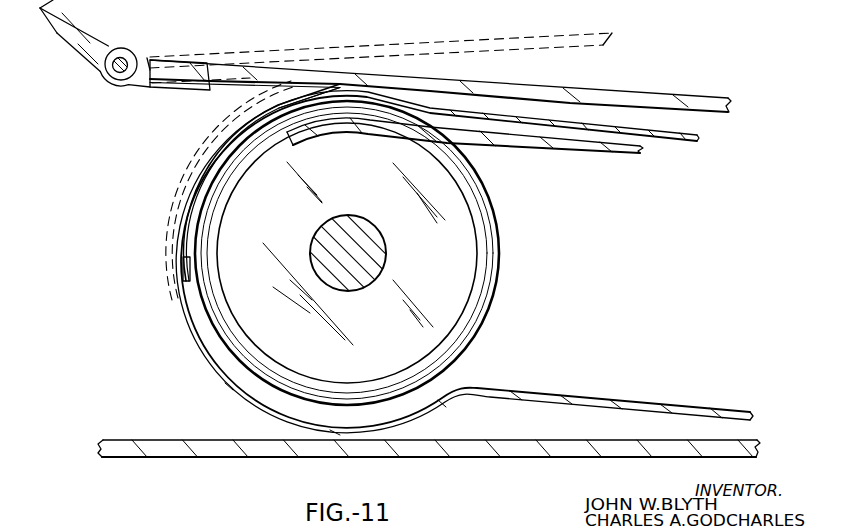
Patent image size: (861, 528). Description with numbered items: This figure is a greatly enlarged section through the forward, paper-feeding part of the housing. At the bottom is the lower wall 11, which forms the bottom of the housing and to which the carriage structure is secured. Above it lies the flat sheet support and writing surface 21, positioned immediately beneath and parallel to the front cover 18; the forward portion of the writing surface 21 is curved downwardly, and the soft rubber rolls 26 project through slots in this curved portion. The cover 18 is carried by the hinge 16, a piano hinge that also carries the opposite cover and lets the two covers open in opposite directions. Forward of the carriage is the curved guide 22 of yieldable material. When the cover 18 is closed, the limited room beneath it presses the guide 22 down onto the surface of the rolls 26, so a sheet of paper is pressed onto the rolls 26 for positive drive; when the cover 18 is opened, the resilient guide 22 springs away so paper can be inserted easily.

The lower wall 11 is at (350, 461).
The hinge 16 is at (134, 57).
The cover 18 is at (634, 72).
The writing surface 21 is at (572, 152).
The curved guide 22 is at (187, 337).
The soft rubber rolls 26 is at (484, 320).